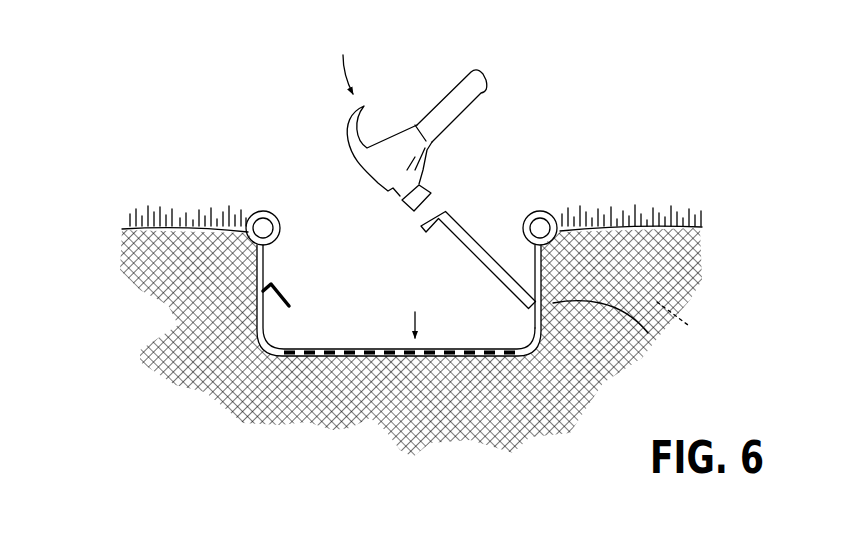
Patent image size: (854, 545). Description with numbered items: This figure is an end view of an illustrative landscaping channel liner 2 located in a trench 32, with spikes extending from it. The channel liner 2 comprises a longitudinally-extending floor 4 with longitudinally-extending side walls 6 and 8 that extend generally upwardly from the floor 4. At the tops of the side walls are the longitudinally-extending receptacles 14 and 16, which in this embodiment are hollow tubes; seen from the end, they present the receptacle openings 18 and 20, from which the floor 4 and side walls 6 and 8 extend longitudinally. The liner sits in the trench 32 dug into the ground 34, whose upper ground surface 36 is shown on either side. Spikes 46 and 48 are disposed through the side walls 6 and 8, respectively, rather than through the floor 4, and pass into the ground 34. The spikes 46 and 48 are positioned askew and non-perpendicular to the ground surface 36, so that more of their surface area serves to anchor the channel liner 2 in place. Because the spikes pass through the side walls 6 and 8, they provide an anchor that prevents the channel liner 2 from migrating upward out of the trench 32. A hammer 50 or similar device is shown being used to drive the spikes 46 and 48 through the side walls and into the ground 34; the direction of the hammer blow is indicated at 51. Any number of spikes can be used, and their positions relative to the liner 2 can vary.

The landscaping channel liner 2 is at (311, 190).
The floor 4 is at (332, 347).
The side wall 6 is at (267, 272).
The side wall 8 is at (535, 282).
The receptacle 14 is at (264, 227).
The receptacle 16 is at (542, 216).
The receptacle opening 18 is at (250, 220).
The receptacle opening 20 is at (543, 221).
The trench 32 is at (620, 328).
The ground 34 is at (665, 270).
The ground surface 36 is at (603, 217).
The spike 46 is at (218, 331).
The spike 48 is at (484, 268).
The hammer 50 is at (393, 146).
The direction arrow 51 is at (447, 253).